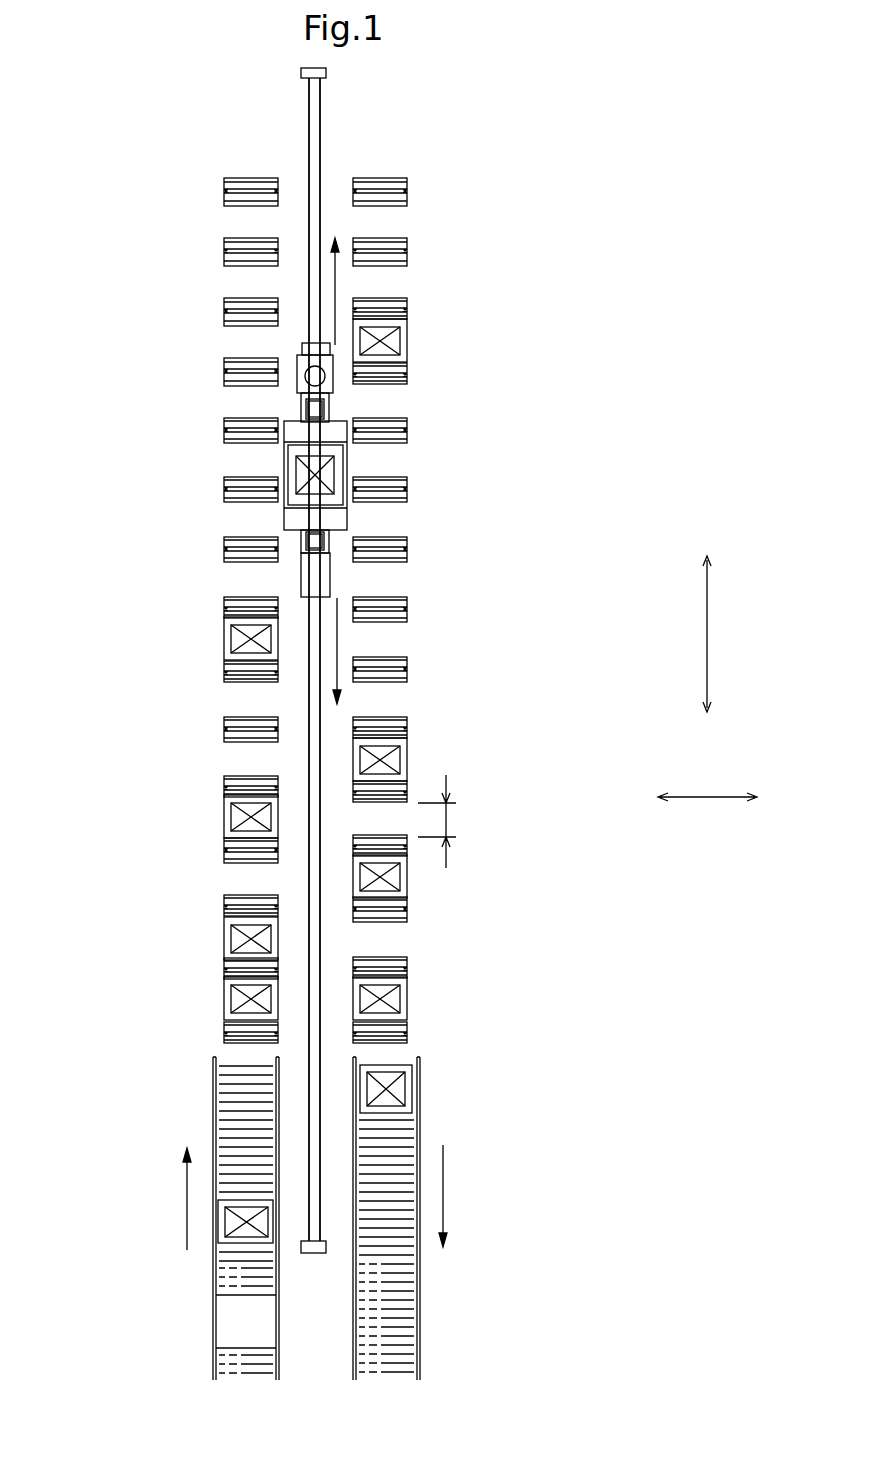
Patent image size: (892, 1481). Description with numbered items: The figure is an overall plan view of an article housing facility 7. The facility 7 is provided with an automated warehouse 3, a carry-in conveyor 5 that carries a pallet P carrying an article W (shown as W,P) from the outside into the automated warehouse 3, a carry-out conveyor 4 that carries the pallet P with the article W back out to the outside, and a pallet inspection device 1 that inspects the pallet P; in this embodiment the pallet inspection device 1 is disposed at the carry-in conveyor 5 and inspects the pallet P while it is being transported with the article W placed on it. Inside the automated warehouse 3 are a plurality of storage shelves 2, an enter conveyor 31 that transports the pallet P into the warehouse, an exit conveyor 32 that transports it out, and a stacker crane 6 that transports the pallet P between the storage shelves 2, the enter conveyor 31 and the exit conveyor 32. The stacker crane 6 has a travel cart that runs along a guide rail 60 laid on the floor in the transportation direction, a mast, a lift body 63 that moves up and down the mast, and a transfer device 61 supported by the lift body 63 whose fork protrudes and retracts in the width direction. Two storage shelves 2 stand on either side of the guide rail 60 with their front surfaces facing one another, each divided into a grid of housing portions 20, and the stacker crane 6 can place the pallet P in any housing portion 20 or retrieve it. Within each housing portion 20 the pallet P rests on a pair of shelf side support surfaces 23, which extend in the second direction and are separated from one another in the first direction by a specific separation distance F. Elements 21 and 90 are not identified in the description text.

The pallet inspection device 1 is at (199, 1325).
The storage shelves 2 is at (240, 149).
The automated warehouse 3 is at (447, 910).
The carry-out conveyor 4 is at (420, 1313).
The carry-in conveyor 5 is at (213, 1285).
The stacker crane 6 is at (252, 467).
The article housing facility 7 is at (489, 187).
The housing portion 20 is at (227, 406).
The shelf 21 is at (240, 252).
The shelf side support surfaces 23 is at (240, 315).
The enter conveyor 31 is at (213, 1125).
The exit conveyor 32 is at (420, 1133).
The guide rail 60 is at (320, 132).
The transfer device 61 is at (337, 420).
The lift body 63 is at (300, 547).
The travel path 90 is at (313, 772).
The article and pallet W,P is at (327, 475).
The separation distance F is at (441, 821).